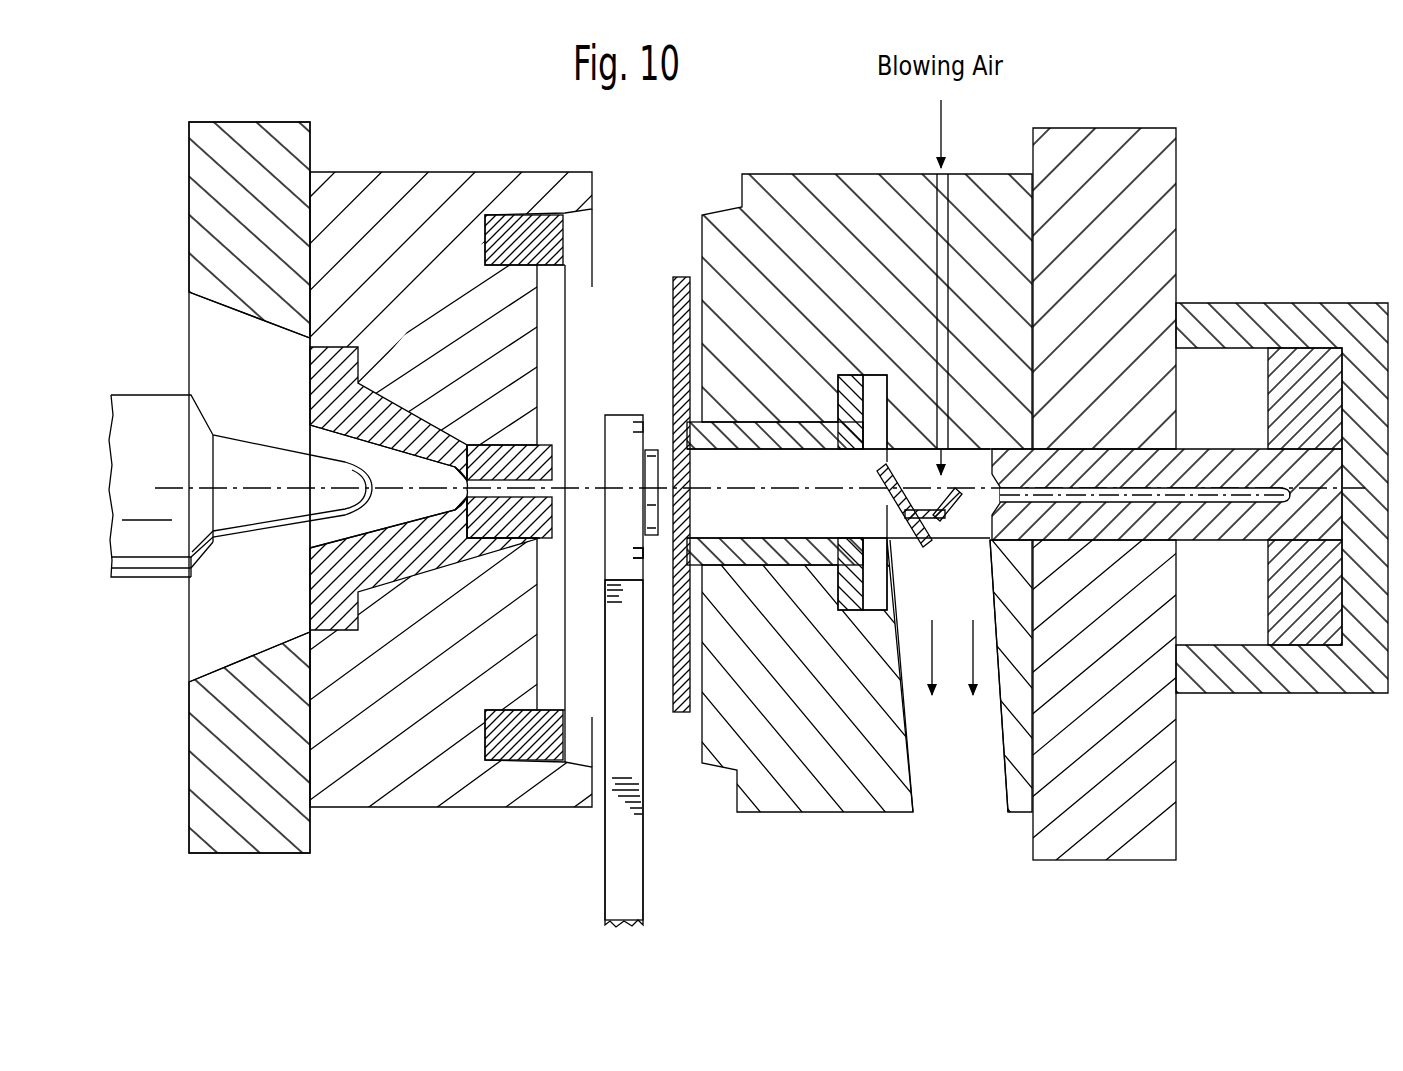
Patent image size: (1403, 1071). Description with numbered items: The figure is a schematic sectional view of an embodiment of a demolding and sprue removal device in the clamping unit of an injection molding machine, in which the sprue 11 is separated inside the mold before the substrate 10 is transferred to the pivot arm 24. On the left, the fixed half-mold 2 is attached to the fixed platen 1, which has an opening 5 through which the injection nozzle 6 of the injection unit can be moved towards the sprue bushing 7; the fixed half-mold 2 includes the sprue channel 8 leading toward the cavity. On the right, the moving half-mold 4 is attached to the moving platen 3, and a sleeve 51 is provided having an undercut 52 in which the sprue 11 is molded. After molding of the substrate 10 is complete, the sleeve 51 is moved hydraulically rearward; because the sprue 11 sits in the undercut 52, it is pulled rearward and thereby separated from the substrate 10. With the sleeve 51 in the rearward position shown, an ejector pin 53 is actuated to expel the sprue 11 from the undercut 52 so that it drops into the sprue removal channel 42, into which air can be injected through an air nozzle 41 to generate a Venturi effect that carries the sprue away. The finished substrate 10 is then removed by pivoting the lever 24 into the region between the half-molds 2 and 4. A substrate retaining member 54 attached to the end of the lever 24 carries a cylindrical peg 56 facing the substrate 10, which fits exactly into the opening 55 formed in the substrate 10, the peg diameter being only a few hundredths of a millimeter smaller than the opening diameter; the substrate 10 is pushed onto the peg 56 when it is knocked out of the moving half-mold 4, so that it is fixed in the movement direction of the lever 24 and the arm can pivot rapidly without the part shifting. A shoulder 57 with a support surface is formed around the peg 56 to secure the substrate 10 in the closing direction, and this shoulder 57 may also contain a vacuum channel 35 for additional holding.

The fixed platen 1 is at (205, 160).
The fixed half-mold 2 is at (415, 208).
The moving platen 3 is at (1165, 163).
The moving half-mold 4 is at (805, 195).
The opening 5 is at (220, 633).
The injection nozzle 6 is at (138, 418).
The sprue bushing 7 is at (370, 415).
The sprue channel 8 is at (543, 491).
The substrate 10 is at (678, 290).
The sprue 11 is at (903, 518).
The pivot arm 24 is at (630, 876).
The vacuum channel 35 is at (634, 548).
The air nozzle 41 is at (945, 220).
The sprue removal channel 42 is at (966, 780).
The sleeve 51 is at (1216, 455).
The undercut 52 is at (990, 515).
The ejector pin 53 is at (1216, 500).
The substrate retaining member 54 is at (608, 437).
The opening 55 is at (688, 470).
The peg 56 is at (657, 447).
The shoulder 57 is at (653, 578).